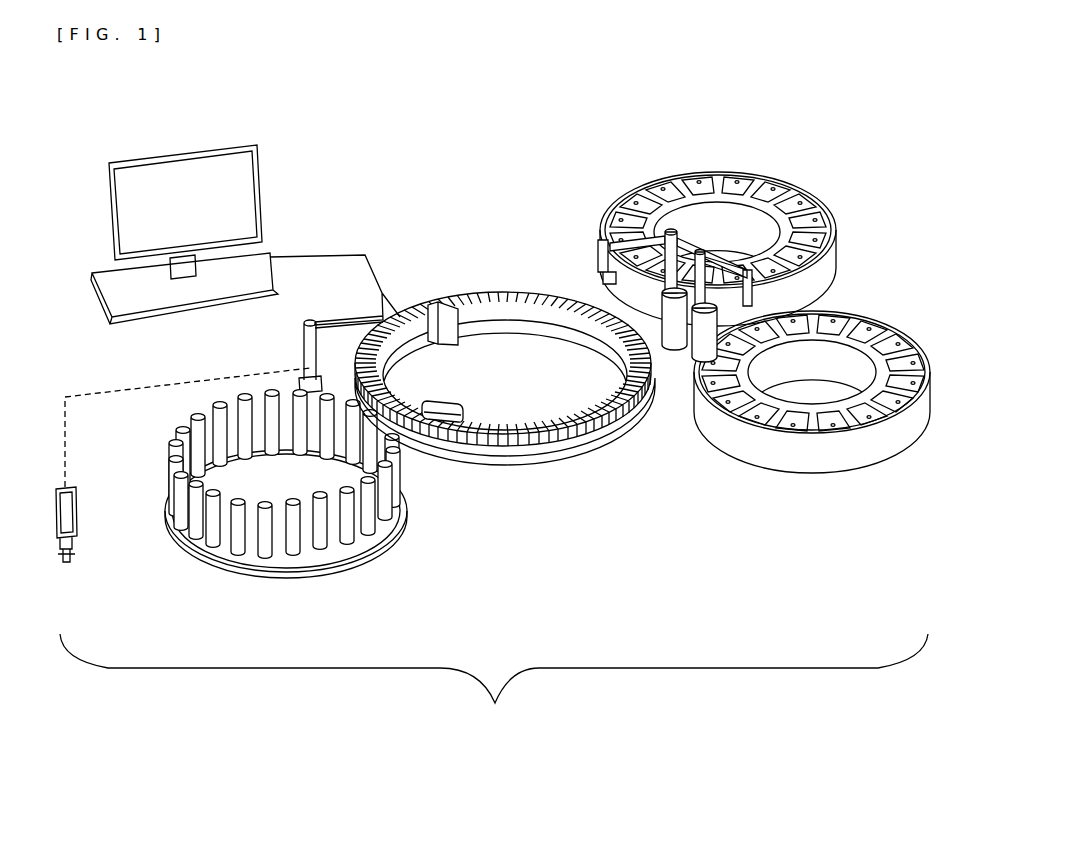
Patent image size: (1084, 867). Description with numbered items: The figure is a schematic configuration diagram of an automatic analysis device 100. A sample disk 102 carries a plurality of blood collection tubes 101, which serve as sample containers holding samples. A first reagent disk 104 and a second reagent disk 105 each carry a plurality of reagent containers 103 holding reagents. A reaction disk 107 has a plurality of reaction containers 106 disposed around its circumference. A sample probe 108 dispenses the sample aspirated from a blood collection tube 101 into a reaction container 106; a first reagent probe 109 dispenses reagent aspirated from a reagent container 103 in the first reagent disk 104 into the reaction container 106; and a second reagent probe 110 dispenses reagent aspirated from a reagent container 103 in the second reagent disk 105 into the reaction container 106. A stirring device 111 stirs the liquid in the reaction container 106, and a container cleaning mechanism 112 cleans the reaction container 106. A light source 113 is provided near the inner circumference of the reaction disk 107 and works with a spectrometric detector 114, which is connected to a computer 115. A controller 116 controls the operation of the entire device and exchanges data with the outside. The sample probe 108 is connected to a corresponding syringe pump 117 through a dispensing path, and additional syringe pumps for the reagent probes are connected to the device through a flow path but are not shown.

The automatic analysis device 100 is at (494, 684).
The blood collection tube 101 is at (352, 513).
The sample disk 102 is at (312, 572).
The reagent container 103 is at (615, 210).
The first reagent disk 104 is at (748, 220).
The second reagent disk 105 is at (848, 445).
The reaction container 106 is at (567, 440).
The reaction disk 107 is at (527, 315).
The sample probe 108 is at (306, 350).
The first reagent probe 109 is at (703, 252).
The second reagent probe 110 is at (750, 302).
The stirring device 111 is at (445, 440).
The container cleaning mechanism 112 is at (603, 252).
The light source 113 is at (452, 326).
The spectrometric detector 114 is at (405, 293).
The computer 115 is at (200, 185).
The controller 116 is at (262, 268).
The syringe pump 117 is at (78, 540).